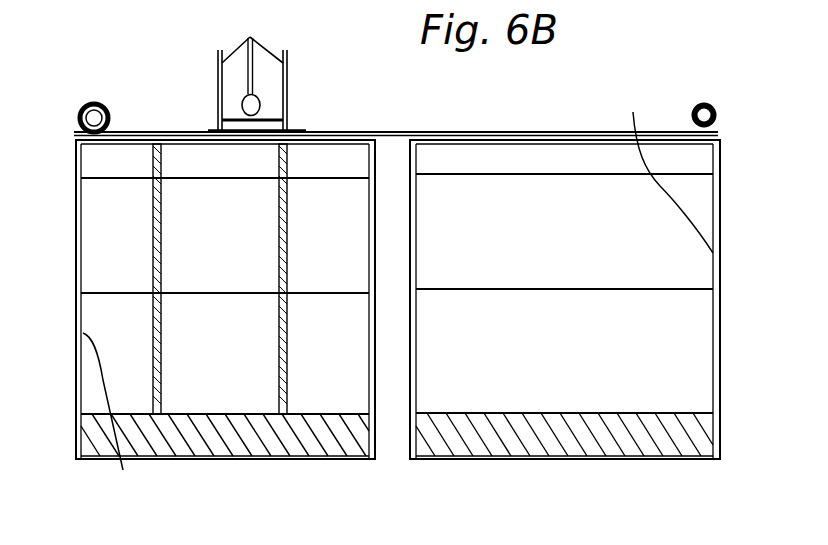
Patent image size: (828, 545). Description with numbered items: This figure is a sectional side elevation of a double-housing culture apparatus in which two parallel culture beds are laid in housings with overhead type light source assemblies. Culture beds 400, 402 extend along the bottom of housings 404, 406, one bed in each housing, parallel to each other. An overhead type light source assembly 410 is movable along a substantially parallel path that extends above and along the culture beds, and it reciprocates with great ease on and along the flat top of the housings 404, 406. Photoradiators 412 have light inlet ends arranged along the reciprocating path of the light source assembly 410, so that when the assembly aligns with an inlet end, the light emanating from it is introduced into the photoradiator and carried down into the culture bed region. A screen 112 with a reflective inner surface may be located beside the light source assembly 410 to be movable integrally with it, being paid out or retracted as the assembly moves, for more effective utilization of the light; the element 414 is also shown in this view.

The screen 112 is at (158, 133).
The culture bed 400 is at (243, 458).
The culture bed 402 is at (540, 456).
The housing 404 is at (129, 415).
The housing 406 is at (664, 169).
The light source assembly 410 is at (287, 83).
The photoradiator 412 is at (162, 212).
The tray top plate 414 is at (513, 131).